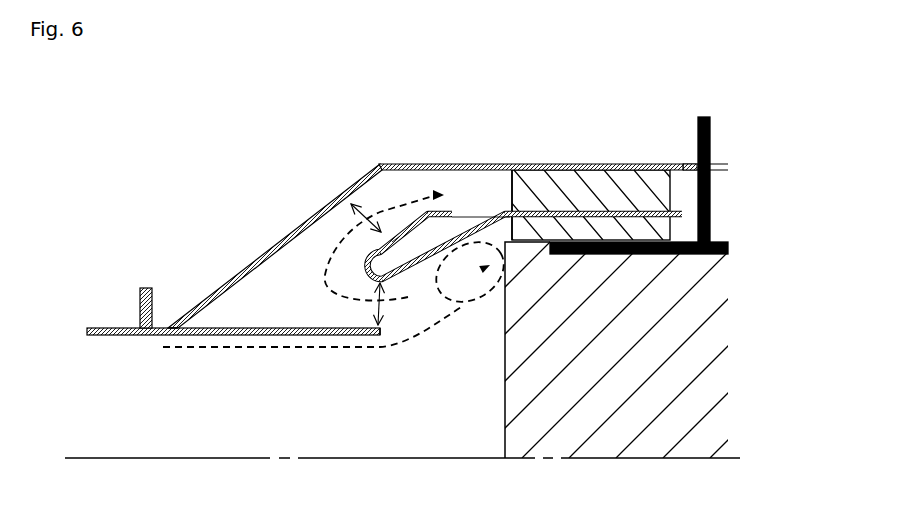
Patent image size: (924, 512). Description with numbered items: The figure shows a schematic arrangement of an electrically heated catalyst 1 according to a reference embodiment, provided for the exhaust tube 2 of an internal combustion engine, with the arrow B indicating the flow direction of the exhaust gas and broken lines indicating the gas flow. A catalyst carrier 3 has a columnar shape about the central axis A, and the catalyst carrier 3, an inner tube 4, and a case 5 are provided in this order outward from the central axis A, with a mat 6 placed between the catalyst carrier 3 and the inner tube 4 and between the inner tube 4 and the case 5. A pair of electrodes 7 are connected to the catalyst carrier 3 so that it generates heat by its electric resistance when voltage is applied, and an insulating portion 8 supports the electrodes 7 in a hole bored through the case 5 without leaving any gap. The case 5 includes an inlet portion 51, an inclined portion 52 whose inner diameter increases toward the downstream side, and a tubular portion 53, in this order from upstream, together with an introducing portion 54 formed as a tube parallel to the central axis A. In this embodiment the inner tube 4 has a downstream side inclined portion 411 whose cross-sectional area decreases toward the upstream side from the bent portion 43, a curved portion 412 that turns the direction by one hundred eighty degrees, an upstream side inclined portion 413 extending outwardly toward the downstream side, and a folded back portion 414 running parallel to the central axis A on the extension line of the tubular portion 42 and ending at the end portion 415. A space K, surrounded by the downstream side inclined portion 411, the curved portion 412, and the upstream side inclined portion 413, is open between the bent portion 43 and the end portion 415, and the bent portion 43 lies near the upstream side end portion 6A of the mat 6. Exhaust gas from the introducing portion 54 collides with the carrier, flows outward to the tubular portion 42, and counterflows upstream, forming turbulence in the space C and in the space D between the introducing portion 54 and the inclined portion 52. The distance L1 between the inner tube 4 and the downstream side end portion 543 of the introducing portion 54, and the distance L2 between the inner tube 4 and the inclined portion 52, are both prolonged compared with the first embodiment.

The electrically heated catalyst 1 is at (227, 161).
The exhaust tube 2 is at (112, 327).
The catalyst carrier 3 is at (557, 442).
The inner tube 4 is at (439, 190).
The downstream side inclined portion 411 is at (368, 263).
The curved portion 412 is at (374, 284).
The upstream side inclined portion 413 is at (375, 250).
The folded back portion 414 is at (426, 210).
The end portion 415 is at (430, 210).
The tubular portion 42 is at (560, 210).
The bent portion 43 is at (455, 211).
The case 5 is at (385, 264).
The inlet portion 51 is at (167, 327).
The inclined portion 52 is at (328, 208).
The tubular portion 53 is at (577, 164).
The introducing portion 54 is at (229, 328).
The downstream side end portion 543 is at (380, 336).
The mat 6 is at (588, 168).
The upstream side end portion 6A is at (512, 184).
The electrodes 7 is at (710, 140).
The insulating portion 8 is at (690, 164).
The central axis A is at (92, 459).
The arrow indicating flow direction of exhaust gas B is at (117, 403).
The space C is at (453, 287).
The space D is at (300, 300).
The space K is at (447, 231).
The distance L1 is at (385, 308).
The distance L2 is at (362, 220).